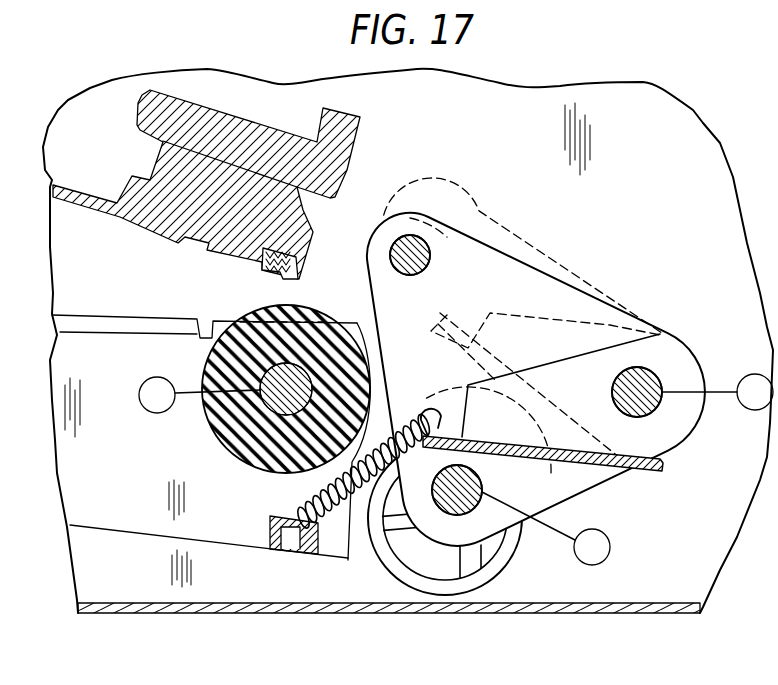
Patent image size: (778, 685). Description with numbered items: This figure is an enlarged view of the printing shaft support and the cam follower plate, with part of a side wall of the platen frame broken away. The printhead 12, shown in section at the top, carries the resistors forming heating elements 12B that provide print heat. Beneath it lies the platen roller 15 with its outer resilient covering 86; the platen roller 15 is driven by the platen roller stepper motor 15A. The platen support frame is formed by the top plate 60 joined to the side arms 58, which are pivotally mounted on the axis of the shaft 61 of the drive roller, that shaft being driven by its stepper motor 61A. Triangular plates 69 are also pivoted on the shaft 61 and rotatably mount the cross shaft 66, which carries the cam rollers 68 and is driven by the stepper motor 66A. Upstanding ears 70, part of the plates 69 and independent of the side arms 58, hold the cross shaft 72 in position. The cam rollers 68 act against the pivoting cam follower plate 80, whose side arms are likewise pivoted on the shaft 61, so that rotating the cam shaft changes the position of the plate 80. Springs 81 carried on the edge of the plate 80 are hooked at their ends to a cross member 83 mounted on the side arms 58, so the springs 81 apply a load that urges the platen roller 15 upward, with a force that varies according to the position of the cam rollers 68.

The printhead 12 is at (177, 203).
The heating elements 12B is at (263, 270).
The platen roller 15 is at (213, 422).
The platen roller stepper motor 15A is at (140, 407).
The side arms 58 is at (123, 515).
The top plate 60 is at (85, 332).
The shaft 61 is at (647, 380).
The stepper motor 61A is at (745, 410).
The cross shaft 66 is at (470, 488).
The stepper motor 66A is at (610, 538).
The cam rollers 68 is at (493, 575).
The triangular plates 69 is at (556, 277).
The upstanding ears 70 is at (460, 255).
The cross shaft 72 is at (417, 250).
The cam follower plate 80 is at (477, 353).
The springs 81 is at (330, 485).
The cross member 83 is at (270, 533).
The outer resilient covering 86 is at (207, 360).